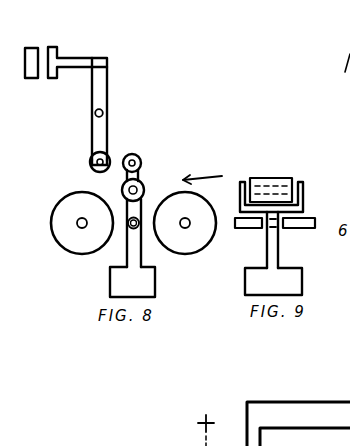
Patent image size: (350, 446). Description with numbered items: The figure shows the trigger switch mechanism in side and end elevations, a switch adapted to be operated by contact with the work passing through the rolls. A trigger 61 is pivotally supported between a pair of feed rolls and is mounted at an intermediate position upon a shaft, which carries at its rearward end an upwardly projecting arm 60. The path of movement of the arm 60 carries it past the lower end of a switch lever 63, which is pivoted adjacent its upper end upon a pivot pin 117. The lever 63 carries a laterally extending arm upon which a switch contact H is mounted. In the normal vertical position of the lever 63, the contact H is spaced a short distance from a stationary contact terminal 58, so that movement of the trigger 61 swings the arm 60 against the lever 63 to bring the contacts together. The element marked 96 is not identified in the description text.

In FIG. 8, the stationary contact terminal 58 is at (25, 59).
In FIG. 8, the switch contact H is at (73, 55).
In FIG. 8, the switch lever 63 is at (108, 131).
In FIG. 8, the pivot pin 117 is at (128, 97).
In FIG. 8, the roller 96 is at (0, 160).
In FIG. 8, the upwardly projecting arm 60 is at (141, 172).
In FIG. 8, the trigger 61 is at (157, 277).
In FIG. 9, the trigger 61 is at (289, 260).